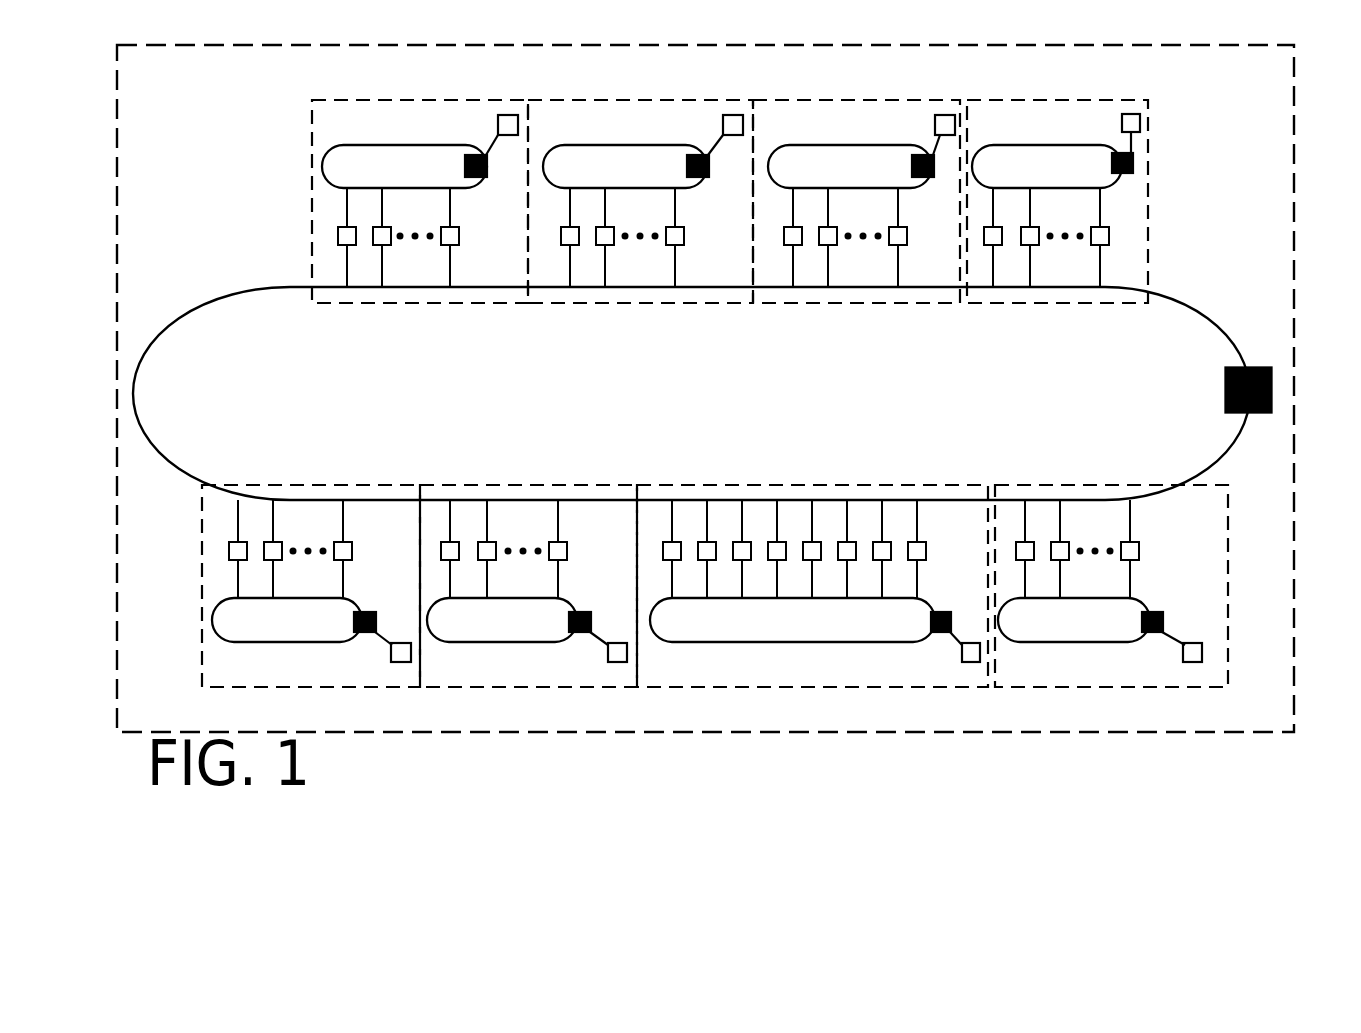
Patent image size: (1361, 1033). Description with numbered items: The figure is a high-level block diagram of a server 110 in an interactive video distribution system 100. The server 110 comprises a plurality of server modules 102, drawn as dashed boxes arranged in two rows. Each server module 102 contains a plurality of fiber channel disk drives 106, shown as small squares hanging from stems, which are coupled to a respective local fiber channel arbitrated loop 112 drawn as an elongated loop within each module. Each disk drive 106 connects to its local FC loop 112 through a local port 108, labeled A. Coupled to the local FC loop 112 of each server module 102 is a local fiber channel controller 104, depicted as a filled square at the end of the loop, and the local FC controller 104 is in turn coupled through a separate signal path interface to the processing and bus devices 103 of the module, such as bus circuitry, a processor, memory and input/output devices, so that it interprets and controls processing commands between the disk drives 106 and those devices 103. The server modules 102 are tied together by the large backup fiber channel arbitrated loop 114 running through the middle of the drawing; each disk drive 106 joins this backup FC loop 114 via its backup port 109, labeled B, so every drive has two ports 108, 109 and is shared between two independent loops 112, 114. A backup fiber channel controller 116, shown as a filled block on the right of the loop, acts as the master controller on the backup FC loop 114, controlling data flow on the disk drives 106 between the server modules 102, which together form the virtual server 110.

The interactive video distribution system 100 is at (1350, 78).
The server 110 is at (117, 120).
The server module 102 is at (420, 100).
The local fiber channel arbitrated loop 112 is at (400, 145).
The processing and bus devices 103 is at (498, 122).
The local fiber channel controller 104 is at (482, 177).
The fiber channel disk drive 106 is at (343, 245).
The local port 108 is at (305, 212).
The backup port 109 is at (305, 255).
The backup fiber channel arbitrated loop 114 is at (148, 390).
The backup fiber channel controller 116 is at (1207, 397).